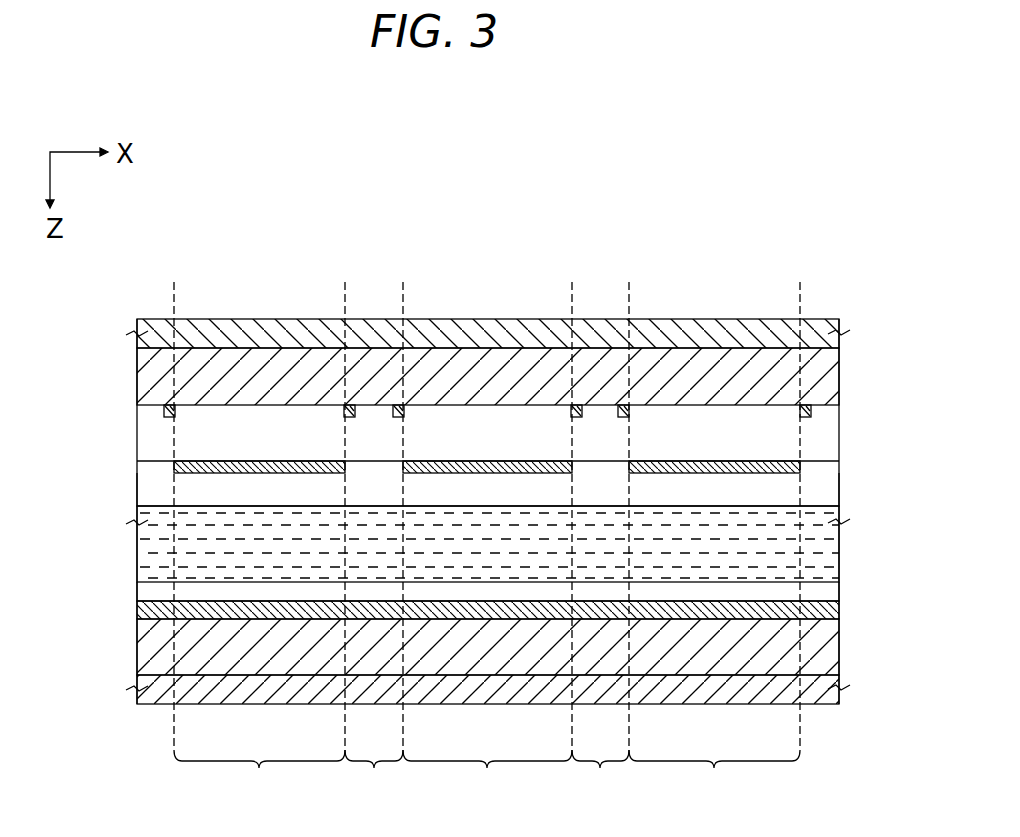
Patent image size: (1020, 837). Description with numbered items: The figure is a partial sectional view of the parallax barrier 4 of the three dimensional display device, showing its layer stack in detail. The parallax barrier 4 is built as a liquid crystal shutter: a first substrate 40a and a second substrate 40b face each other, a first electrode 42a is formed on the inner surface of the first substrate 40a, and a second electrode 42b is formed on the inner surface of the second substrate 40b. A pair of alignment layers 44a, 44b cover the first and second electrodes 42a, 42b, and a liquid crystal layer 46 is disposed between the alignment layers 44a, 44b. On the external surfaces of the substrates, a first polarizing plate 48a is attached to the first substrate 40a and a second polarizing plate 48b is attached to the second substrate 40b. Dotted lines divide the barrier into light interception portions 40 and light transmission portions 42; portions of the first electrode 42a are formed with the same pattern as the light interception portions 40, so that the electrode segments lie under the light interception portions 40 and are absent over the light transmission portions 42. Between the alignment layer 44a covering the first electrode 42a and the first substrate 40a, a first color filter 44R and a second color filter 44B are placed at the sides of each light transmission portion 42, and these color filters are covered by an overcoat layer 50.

The parallax barrier 4 is at (393, 167).
The light interception portions 40 is at (487, 777).
The light transmission portions 42 is at (487, 777).
The first substrate 40a is at (140, 379).
The second substrate 40b is at (140, 645).
The first electrode 42a is at (805, 464).
The second electrode 42b is at (838, 612).
The alignment layer 44a is at (832, 497).
The alignment layer 44b is at (835, 590).
The first color filter 44R is at (576, 410).
The second color filter 44B is at (629, 410).
The liquid crystal layer 46 is at (488, 544).
The first polarizing plate 48a is at (471, 319).
The second polarizing plate 48b is at (140, 695).
The overcoat layer 50 is at (818, 432).